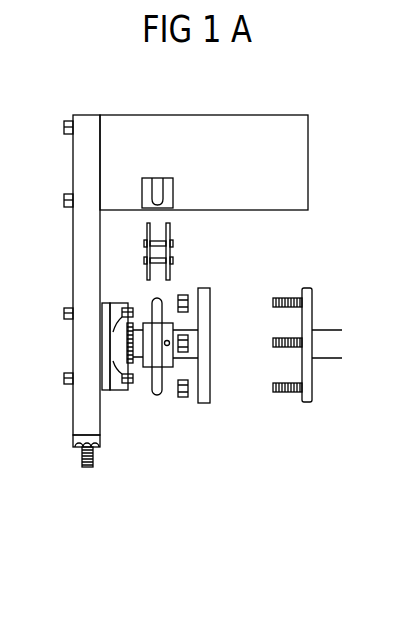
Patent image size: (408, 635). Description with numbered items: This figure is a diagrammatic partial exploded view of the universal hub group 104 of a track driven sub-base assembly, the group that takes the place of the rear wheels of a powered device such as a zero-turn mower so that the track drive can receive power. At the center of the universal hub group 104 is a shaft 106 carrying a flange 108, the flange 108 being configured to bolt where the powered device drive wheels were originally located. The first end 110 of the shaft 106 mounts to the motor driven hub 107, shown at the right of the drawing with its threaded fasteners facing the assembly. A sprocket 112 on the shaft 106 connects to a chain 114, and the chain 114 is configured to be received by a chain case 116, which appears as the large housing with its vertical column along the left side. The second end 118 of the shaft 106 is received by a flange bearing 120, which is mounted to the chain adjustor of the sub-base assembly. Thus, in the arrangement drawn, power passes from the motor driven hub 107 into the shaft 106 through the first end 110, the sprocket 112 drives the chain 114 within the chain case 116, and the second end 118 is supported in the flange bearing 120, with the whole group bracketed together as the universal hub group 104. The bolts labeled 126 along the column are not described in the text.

The universal hub group 104 is at (262, 512).
The shaft 106 is at (175, 368).
The motor driven hub 107 is at (310, 403).
The flange 108 is at (210, 403).
The first end 110 is at (212, 375).
The sprocket 112 is at (158, 396).
The chain 114 is at (173, 250).
The chain case 116 is at (309, 208).
The second end 118 is at (130, 364).
The flange bearing 120 is at (115, 390).
The bolts 126 is at (64, 120).